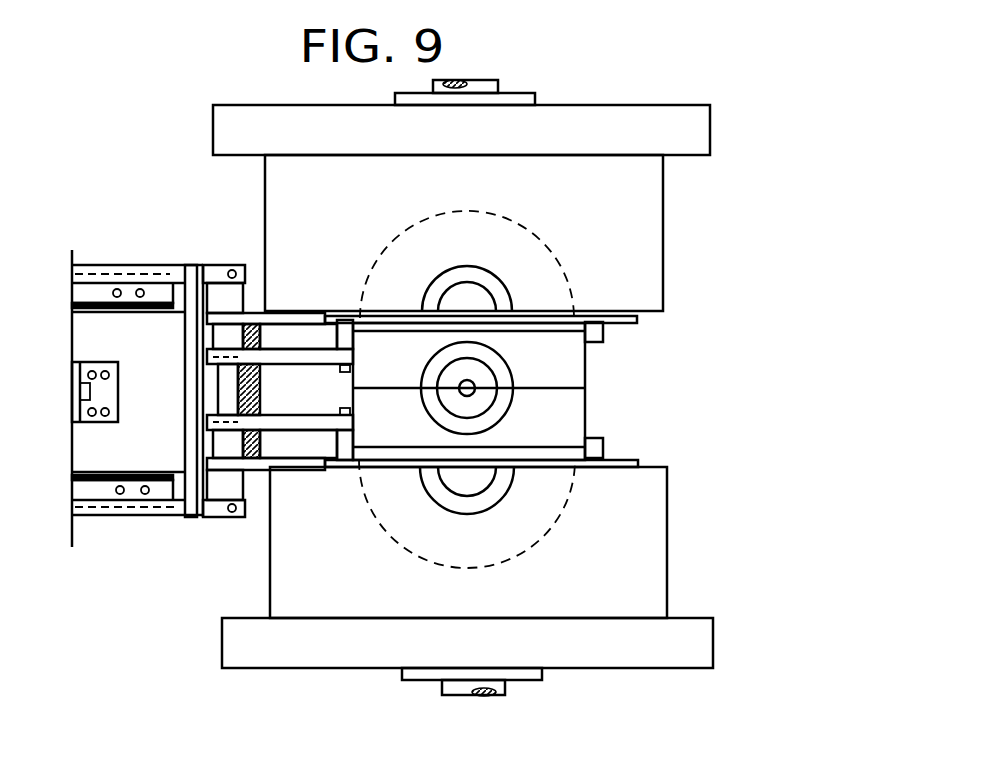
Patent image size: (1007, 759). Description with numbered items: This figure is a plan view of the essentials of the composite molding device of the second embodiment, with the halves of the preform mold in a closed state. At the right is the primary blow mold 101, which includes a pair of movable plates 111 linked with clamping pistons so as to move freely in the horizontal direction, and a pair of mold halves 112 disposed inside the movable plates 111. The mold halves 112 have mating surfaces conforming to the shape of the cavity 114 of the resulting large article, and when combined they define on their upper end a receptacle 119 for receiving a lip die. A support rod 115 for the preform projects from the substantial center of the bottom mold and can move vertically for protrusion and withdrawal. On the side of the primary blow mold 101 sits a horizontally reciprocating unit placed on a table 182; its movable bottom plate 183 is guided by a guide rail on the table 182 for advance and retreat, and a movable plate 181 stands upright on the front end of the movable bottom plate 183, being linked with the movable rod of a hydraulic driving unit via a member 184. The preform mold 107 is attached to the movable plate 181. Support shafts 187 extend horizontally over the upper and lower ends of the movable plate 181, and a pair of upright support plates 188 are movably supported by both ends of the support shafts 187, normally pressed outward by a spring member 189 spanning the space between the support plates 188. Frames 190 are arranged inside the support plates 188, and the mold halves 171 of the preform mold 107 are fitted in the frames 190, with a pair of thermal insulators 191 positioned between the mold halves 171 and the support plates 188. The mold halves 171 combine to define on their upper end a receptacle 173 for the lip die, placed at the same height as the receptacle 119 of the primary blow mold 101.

The primary blow mold 101 is at (678, 248).
The preform mold 107 is at (587, 398).
The movable plates 111 is at (667, 104).
The mold halves 112 is at (635, 278).
The cavity 114 is at (533, 253).
The support rod 115 is at (462, 387).
The receptacle 119 is at (433, 292).
The mold halves 171 is at (567, 365).
The receptacle 173 is at (438, 412).
The movable plate 181 is at (193, 403).
The table 182 is at (178, 500).
The movable bottom plate 183 is at (108, 450).
The member 184 is at (100, 362).
The support shafts 187 is at (220, 337).
The support plates 188 is at (293, 315).
The spring member 189 is at (260, 383).
The frames 190 is at (605, 445).
The thermal insulators 191 is at (552, 333).